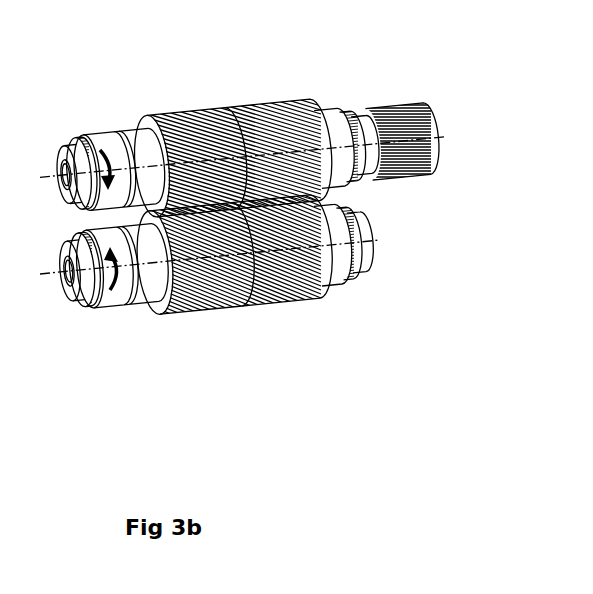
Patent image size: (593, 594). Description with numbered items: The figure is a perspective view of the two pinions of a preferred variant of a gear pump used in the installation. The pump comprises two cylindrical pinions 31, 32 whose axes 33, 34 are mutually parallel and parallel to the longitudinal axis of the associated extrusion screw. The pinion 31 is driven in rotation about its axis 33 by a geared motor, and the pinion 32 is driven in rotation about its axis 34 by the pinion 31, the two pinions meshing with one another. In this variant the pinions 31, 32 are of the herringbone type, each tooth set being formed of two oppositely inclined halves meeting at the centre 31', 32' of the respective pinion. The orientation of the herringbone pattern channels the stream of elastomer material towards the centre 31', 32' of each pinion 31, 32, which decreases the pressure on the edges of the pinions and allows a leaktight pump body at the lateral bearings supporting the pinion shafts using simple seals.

The pinion 31 is at (239, 154).
The centre of pinion 31' is at (225, 149).
The pinion 32 is at (250, 253).
The centre of pinion 32' is at (227, 253).
The axis 33 is at (48, 177).
The axis 34 is at (70, 268).